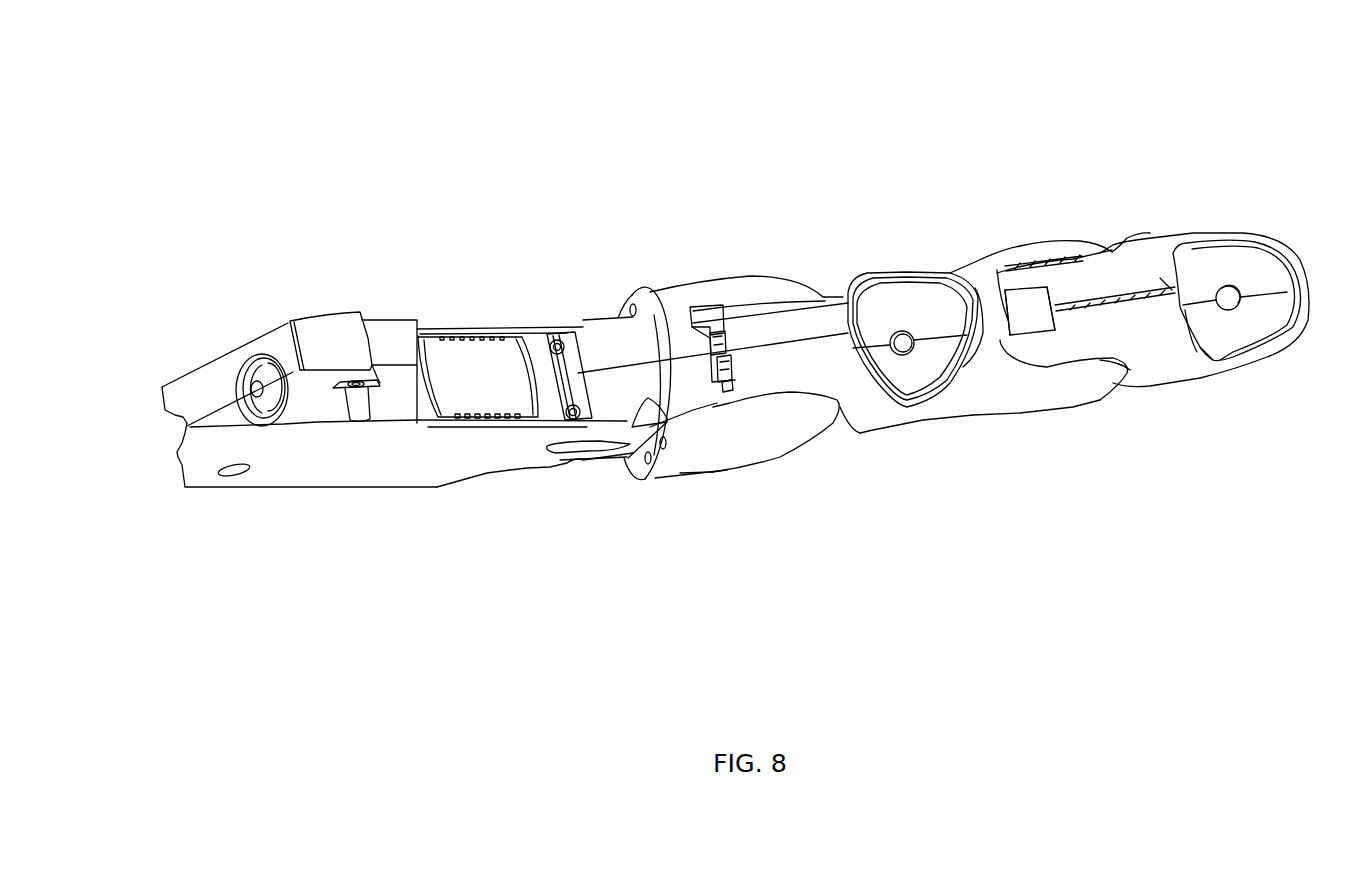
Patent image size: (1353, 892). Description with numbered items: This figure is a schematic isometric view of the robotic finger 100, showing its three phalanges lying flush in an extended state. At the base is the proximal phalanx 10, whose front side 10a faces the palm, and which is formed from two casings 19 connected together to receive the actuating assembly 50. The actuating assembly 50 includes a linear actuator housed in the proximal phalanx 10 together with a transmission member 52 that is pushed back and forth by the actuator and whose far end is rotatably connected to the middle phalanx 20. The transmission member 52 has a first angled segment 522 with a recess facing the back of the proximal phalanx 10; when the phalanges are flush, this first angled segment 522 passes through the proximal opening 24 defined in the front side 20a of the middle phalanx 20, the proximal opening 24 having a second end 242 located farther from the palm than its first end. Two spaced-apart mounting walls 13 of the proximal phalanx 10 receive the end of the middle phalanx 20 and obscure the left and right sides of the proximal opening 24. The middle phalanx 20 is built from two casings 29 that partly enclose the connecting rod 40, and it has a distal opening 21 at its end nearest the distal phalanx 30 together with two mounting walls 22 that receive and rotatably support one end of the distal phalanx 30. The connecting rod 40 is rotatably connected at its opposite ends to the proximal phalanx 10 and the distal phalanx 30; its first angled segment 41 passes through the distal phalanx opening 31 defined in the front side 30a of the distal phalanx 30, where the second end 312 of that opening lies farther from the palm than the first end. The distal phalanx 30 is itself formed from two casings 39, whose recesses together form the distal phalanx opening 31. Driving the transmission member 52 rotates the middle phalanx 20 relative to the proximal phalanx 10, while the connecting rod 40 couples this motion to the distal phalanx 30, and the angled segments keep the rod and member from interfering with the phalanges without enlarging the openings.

The robotic finger 100 is at (752, 127).
The proximal phalanx 10 is at (351, 455).
The front side of the proximal phalanx 10a is at (408, 410).
The actuating assembly 50 is at (468, 365).
The casings 19 is at (618, 398).
The proximal opening 24 is at (690, 310).
The second end of the proximal opening 242 is at (722, 305).
The transmission member 52 is at (709, 375).
The first angled segment of the transmission member 522 is at (720, 385).
The mounting walls of the proximal phalanx 13 is at (770, 287).
The front side of the middle phalanx 20a is at (832, 300).
The middle phalanx 20 is at (920, 415).
The distal opening 21 is at (997, 297).
The casings of the middle phalanx 29 is at (991, 390).
The mounting walls of the middle phalanx 22 is at (1045, 253).
The connecting rod 40 is at (1005, 296).
The distal phalanx opening 31 is at (1026, 288).
The second end of the distal phalanx opening 312 is at (1053, 287).
The first angled segment of the connecting rod 41 is at (1027, 317).
The distal phalanx 30 is at (1170, 392).
The front side of the distal phalanx 30a is at (1141, 268).
The casings of the distal phalanx 39 is at (1200, 347).